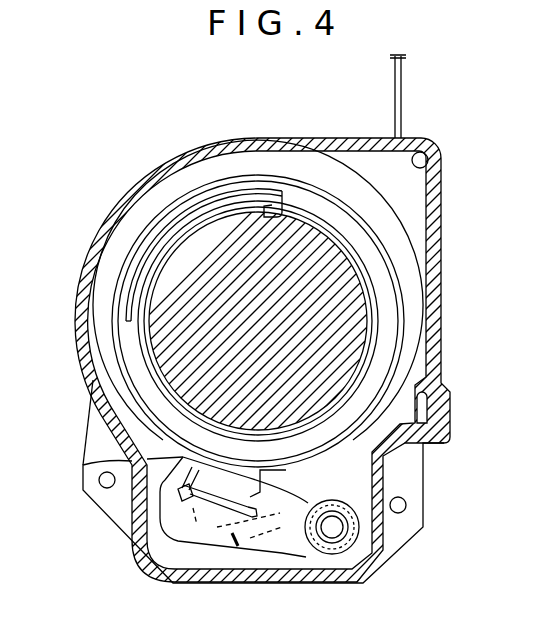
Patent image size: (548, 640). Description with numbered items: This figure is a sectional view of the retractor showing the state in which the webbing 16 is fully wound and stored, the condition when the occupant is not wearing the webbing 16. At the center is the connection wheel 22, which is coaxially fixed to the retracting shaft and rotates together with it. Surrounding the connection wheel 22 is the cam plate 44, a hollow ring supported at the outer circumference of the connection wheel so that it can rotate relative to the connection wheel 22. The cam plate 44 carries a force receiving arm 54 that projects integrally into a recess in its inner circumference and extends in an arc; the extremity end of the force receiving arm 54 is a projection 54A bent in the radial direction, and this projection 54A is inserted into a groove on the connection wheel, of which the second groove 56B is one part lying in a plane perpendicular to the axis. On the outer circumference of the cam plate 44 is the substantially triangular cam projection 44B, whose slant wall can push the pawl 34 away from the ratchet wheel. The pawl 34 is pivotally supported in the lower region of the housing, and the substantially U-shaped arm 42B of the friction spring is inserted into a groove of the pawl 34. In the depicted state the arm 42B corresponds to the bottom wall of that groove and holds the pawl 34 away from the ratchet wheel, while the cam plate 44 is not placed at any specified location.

The webbing 16 is at (401, 93).
The connection wheel 22 is at (343, 298).
The pawl 34 is at (272, 523).
The arm 42B is at (87, 461).
The cam plate 44 is at (385, 338).
The cam projection 44B is at (268, 481).
The force receiving arm 54 is at (183, 218).
The projection 54A is at (268, 207).
The second groove 56B is at (341, 240).